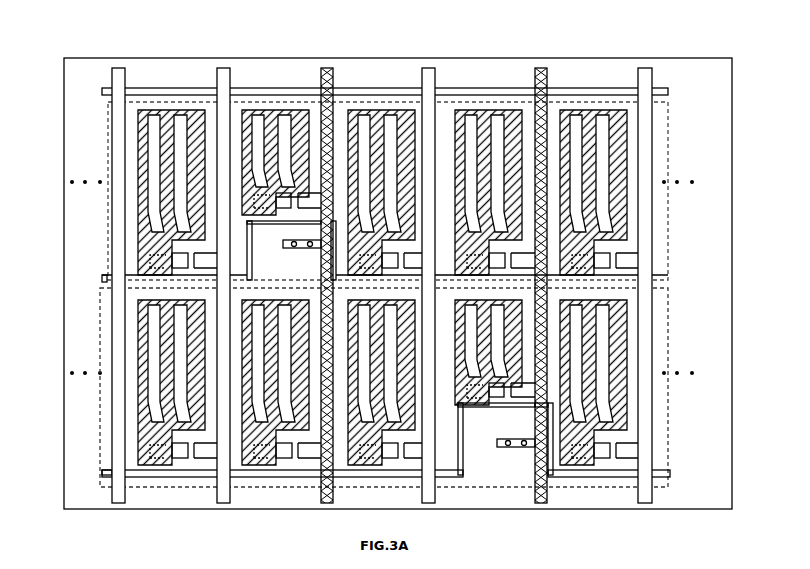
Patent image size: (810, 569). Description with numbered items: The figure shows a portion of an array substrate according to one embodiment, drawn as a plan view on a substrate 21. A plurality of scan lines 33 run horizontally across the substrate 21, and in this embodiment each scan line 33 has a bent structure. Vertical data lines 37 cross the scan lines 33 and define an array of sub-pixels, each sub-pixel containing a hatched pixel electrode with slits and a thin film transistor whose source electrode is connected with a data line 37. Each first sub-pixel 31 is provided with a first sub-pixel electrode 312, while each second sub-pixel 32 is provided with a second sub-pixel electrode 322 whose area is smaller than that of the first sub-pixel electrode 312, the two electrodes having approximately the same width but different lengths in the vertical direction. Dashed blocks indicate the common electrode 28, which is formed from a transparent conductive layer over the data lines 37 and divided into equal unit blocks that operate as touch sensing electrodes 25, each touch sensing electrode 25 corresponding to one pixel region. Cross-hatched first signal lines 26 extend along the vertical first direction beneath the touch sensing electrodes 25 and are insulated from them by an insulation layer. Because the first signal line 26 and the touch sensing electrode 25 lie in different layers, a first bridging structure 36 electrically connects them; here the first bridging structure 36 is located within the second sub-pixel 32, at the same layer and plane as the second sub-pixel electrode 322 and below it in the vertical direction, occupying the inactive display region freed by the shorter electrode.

The substrate 21 is at (76, 92).
The touch sensing electrode 25 is at (665, 233).
The common electrode 28 is at (742, 308).
The first signal line 26 is at (326, 68).
The first sub-pixel 31 is at (556, 108).
The first sub-pixel electrode 312 is at (602, 137).
The second sub-pixel 32 is at (240, 105).
The second sub-pixel electrode 322 is at (261, 120).
The scan line 33 is at (102, 279).
The first bridging structure 36 is at (283, 240).
The data line 37 is at (655, 143).